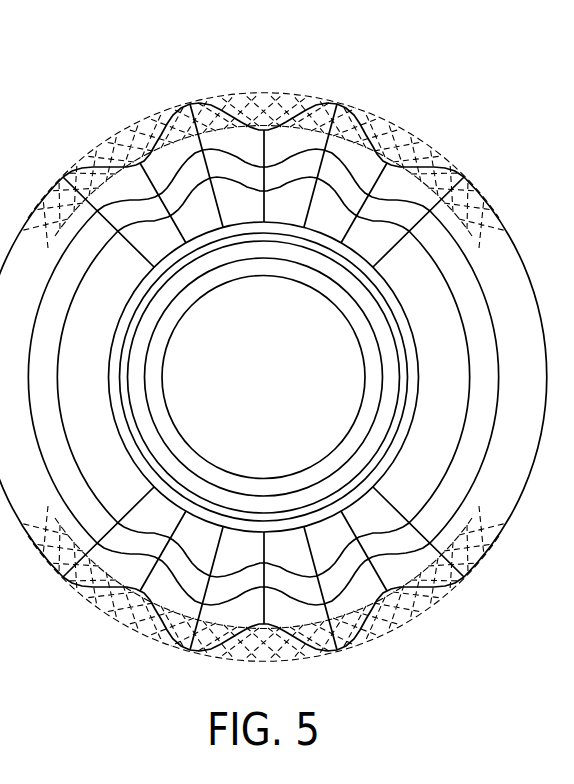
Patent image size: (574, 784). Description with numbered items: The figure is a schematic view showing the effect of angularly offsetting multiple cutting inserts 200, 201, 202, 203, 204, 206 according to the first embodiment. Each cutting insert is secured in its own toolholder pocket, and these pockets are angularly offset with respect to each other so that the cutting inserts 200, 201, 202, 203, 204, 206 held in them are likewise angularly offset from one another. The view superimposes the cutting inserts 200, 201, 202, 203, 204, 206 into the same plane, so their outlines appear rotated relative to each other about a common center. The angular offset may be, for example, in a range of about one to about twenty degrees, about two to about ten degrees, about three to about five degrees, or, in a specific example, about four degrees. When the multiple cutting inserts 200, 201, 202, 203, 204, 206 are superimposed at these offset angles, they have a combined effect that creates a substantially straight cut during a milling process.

The cutting insert 200 is at (335, 103).
The cutting insert 201 is at (352, 104).
The cutting insert 202 is at (380, 107).
The cutting insert 203 is at (386, 130).
The cutting insert 204 is at (417, 140).
The cutting insert 206 is at (437, 143).